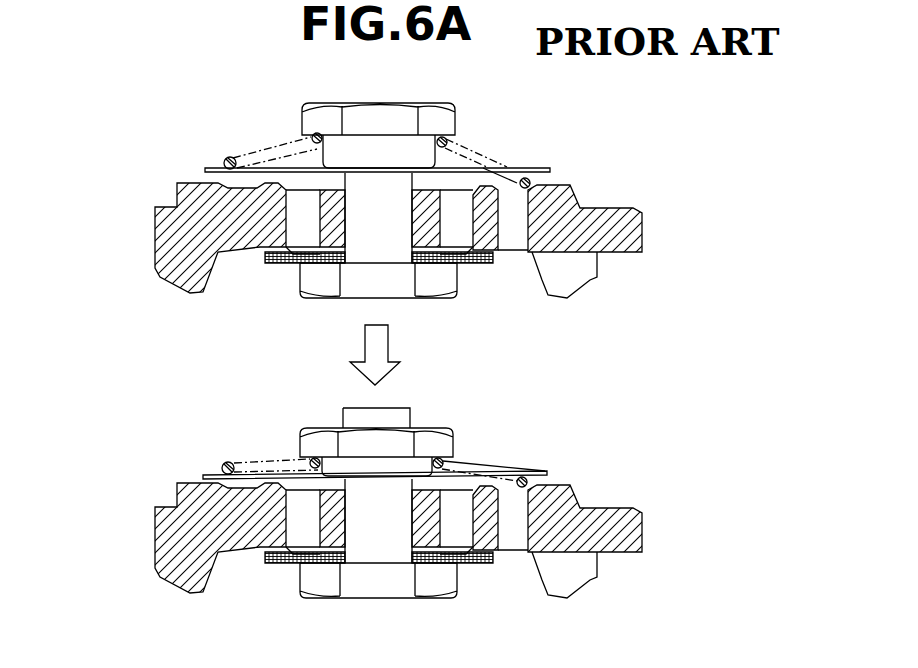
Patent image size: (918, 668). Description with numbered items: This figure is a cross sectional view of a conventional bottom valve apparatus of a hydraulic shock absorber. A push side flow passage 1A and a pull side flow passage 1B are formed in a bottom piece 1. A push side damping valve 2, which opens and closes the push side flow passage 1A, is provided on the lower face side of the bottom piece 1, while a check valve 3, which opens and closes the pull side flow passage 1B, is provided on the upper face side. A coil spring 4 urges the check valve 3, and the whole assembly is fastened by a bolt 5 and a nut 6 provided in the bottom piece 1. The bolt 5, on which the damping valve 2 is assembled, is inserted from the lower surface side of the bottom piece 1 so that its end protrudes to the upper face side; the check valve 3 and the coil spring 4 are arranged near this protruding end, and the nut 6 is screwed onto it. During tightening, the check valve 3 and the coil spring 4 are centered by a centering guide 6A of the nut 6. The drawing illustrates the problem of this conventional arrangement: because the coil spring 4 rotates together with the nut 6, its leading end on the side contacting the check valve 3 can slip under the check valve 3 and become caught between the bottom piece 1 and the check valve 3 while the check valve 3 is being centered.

The bottom piece 1 is at (378, 384).
The push side flow passage 1A is at (300, 220).
The pull side flow passage 1B is at (515, 220).
The push side damping valve 2 is at (482, 264).
The check valve 3 is at (462, 160).
The coil spring 4 is at (533, 180).
The bolt 5 is at (313, 282).
The nut 6 is at (323, 116).
The centering guide 6A is at (334, 158).